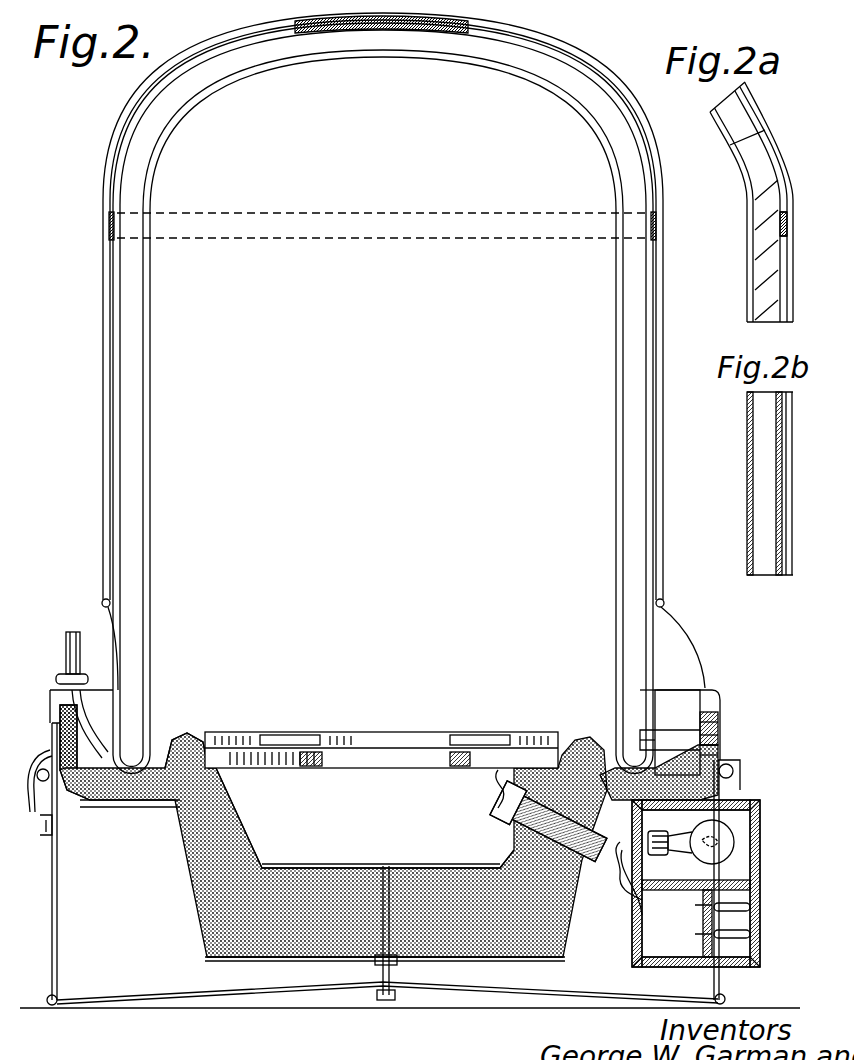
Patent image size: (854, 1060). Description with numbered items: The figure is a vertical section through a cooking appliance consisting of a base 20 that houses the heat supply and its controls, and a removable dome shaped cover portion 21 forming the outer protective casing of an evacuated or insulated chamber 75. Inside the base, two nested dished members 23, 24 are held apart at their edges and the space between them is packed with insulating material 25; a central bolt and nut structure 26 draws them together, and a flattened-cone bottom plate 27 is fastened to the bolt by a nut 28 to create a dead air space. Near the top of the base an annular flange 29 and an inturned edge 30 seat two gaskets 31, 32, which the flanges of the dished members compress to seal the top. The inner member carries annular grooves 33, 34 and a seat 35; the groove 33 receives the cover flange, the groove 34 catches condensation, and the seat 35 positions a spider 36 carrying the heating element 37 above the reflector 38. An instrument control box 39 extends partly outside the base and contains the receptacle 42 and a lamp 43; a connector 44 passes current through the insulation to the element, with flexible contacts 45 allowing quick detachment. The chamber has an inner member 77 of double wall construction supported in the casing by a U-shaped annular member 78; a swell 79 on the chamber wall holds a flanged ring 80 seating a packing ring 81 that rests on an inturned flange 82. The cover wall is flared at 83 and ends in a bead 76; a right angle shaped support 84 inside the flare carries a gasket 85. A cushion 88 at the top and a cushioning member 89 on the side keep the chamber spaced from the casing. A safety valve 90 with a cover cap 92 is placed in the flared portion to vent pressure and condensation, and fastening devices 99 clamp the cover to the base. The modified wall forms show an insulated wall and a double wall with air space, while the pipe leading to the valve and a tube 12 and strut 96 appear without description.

In FIG. 2, the tube 12 is at (73, 632).
In FIG. 2, the base 20 is at (52, 945).
In FIG. 2, the cover portion 21 is at (103, 496).
In FIG. 2A, the cover portion 21 is at (792, 118).
In FIG. 2B, the cover portion 21 is at (790, 576).
In FIG. 2, the dished member 23 is at (188, 893).
In FIG. 2, the dished member 24 is at (260, 847).
In FIG. 2, the insulating material 25 is at (205, 935).
In FIG. 2, the bolt and nut structure 26 is at (396, 962).
In FIG. 2, the bottom plate 27 is at (285, 999).
In FIG. 2, the nut 28 is at (394, 1000).
In FIG. 2, the annular flange 29 is at (66, 790).
In FIG. 2, the inturned edge 30 is at (718, 748).
In FIG. 2, the gasket 31 is at (718, 738).
In FIG. 2, the gasket 32 is at (718, 756).
In FIG. 2, the annular groove 33 is at (128, 819).
In FIG. 2, the annular groove 34 is at (148, 800).
In FIG. 2, the seat 35 is at (205, 736).
In FIG. 2, the spider 36 is at (316, 768).
In FIG. 2, the heating element 37 is at (308, 732).
In FIG. 2, the reflector 38 is at (442, 857).
In FIG. 2, the instrument control box 39 is at (648, 965).
In FIG. 2, the receptacle 42 is at (745, 914).
In FIG. 2, the lamp 43 is at (720, 850).
In FIG. 2, the connector 44 is at (508, 824).
In FIG. 2, the flexible contacts 45 is at (496, 782).
In FIG. 2, the evacuated or insulated chamber 75 is at (658, 353).
In FIG. 2A, the evacuated or insulated chamber 75 is at (784, 318).
In FIG. 2B, the evacuated or insulated chamber 75 is at (779, 574).
In FIG. 2, the bead 76 is at (38, 765).
In FIG. 2, the inner member 77 is at (145, 408).
In FIG. 2, the annular member 78 is at (690, 720).
In FIG. 2, the swell 79 is at (118, 660).
In FIG. 2, the flanged ring 80 is at (690, 730).
In FIG. 2, the packing ring 81 is at (655, 728).
In FIG. 2, the inturned flange 82 is at (655, 746).
In FIG. 2, the flared portion 83 is at (700, 688).
In FIG. 2, the right angle shaped support 84 is at (718, 716).
In FIG. 2, the gasket 85 is at (718, 726).
In FIG. 2, the cushion 88 is at (470, 22).
In FIG. 2, the cushioning member 89 is at (108, 250).
In FIG. 2, the safety valve 90 is at (56, 676).
In FIG. 2, the cover cap 92 is at (66, 642).
In FIG. 2, the strut 96 is at (88, 607).
In FIG. 2, the fastening devices 99 is at (44, 832).